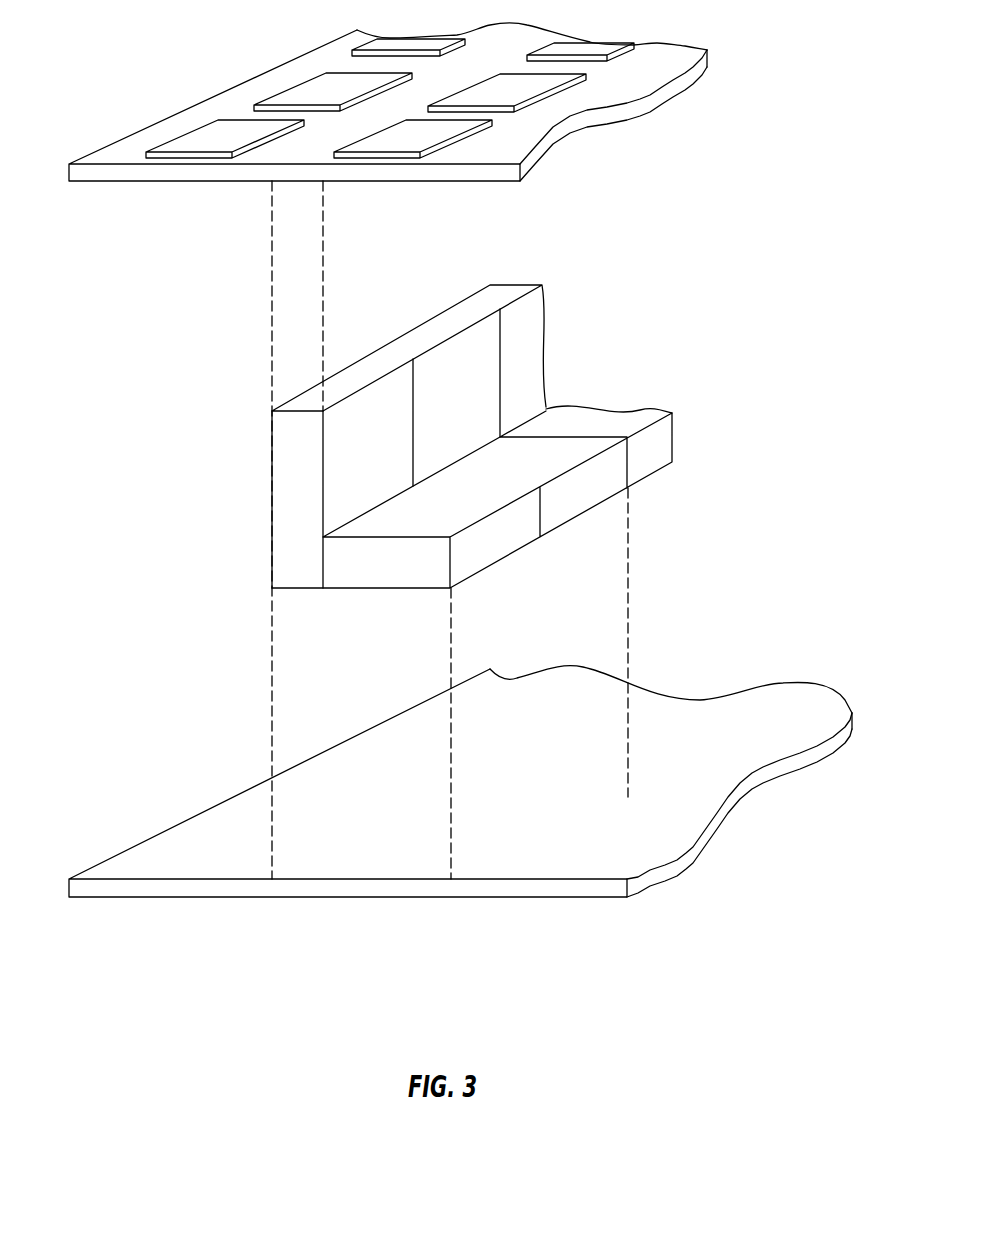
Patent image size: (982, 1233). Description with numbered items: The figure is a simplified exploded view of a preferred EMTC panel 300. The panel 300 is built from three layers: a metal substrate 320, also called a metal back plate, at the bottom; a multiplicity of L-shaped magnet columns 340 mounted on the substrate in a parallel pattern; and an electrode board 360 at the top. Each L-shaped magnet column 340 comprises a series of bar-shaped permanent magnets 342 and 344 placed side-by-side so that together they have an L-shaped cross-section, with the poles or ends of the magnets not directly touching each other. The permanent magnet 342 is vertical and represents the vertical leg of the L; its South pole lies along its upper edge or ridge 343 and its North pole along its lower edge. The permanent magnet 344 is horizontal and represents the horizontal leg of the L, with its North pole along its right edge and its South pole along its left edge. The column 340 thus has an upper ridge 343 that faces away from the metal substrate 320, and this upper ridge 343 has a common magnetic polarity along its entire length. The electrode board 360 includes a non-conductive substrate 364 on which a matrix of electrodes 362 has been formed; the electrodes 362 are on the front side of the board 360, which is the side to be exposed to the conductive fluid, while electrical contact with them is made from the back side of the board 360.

The EMTC panel 300 is at (810, 147).
The metal substrate 320 is at (122, 858).
The L-shaped magnet column 340 is at (232, 403).
The permanent magnet 342 is at (387, 465).
The upper ridge 343 is at (281, 409).
The permanent magnet 344 is at (497, 552).
The electrode board 360 is at (152, 125).
The electrodes 362 is at (303, 85).
The non-conductive substrate 364 is at (667, 53).